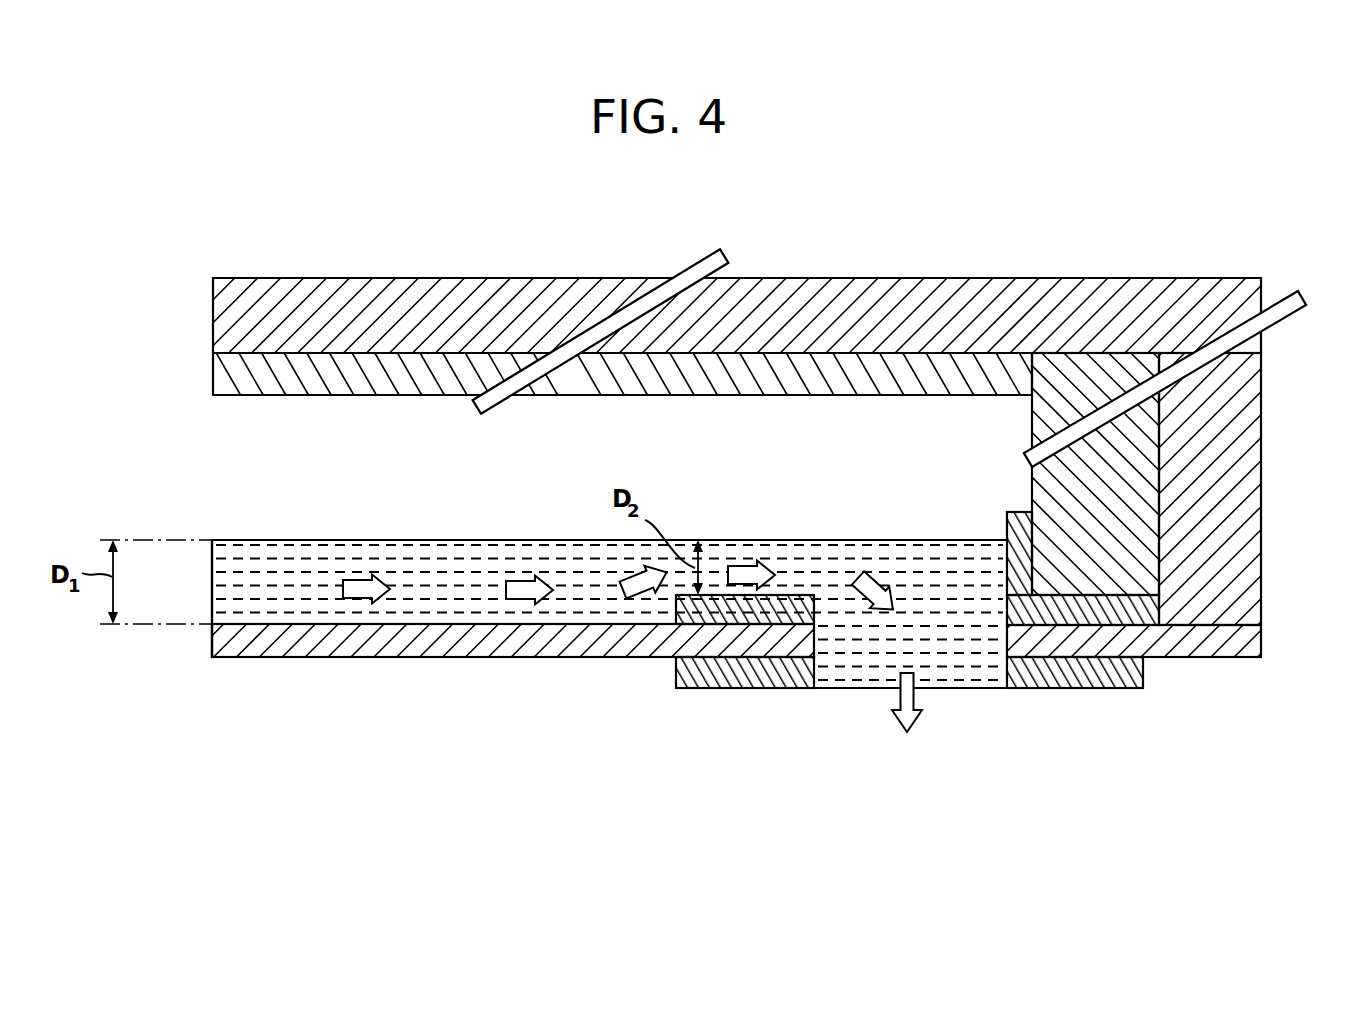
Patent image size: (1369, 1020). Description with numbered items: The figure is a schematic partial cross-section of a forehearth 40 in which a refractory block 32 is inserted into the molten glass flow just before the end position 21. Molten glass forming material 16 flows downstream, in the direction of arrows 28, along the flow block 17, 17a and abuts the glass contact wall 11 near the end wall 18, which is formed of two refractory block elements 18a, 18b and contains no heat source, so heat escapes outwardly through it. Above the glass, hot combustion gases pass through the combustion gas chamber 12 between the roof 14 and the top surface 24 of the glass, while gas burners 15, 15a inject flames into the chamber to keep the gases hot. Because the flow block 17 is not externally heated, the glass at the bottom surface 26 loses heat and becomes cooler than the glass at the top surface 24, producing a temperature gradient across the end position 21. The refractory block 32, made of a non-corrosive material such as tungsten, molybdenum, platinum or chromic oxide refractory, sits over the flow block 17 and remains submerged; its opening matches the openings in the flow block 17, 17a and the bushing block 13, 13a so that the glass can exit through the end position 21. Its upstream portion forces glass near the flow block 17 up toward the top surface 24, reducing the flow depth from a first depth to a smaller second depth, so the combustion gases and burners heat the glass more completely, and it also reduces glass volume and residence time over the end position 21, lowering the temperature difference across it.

The forehearth 40 is at (985, 228).
The combustion gas chamber 12 is at (220, 463).
The roof 14 is at (401, 288).
The gas burner 15 is at (700, 265).
The gas burner 15a is at (1290, 292).
The molten glass forming material 16 is at (235, 565).
The flow block 17 is at (446, 655).
The flow block 17a is at (1172, 645).
The end wall 18 is at (1151, 489).
The refractory block element 18a is at (1255, 415).
The refractory block element 18b is at (1038, 423).
The glass contact wall 11 is at (1005, 523).
The bushing block 13 is at (740, 678).
The bushing block 13a is at (1085, 670).
The end position 21 is at (861, 706).
The top surface 24 is at (368, 533).
The bottom surface 26 is at (280, 614).
The arrows 28 is at (522, 586).
The refractory block 32 is at (790, 605).